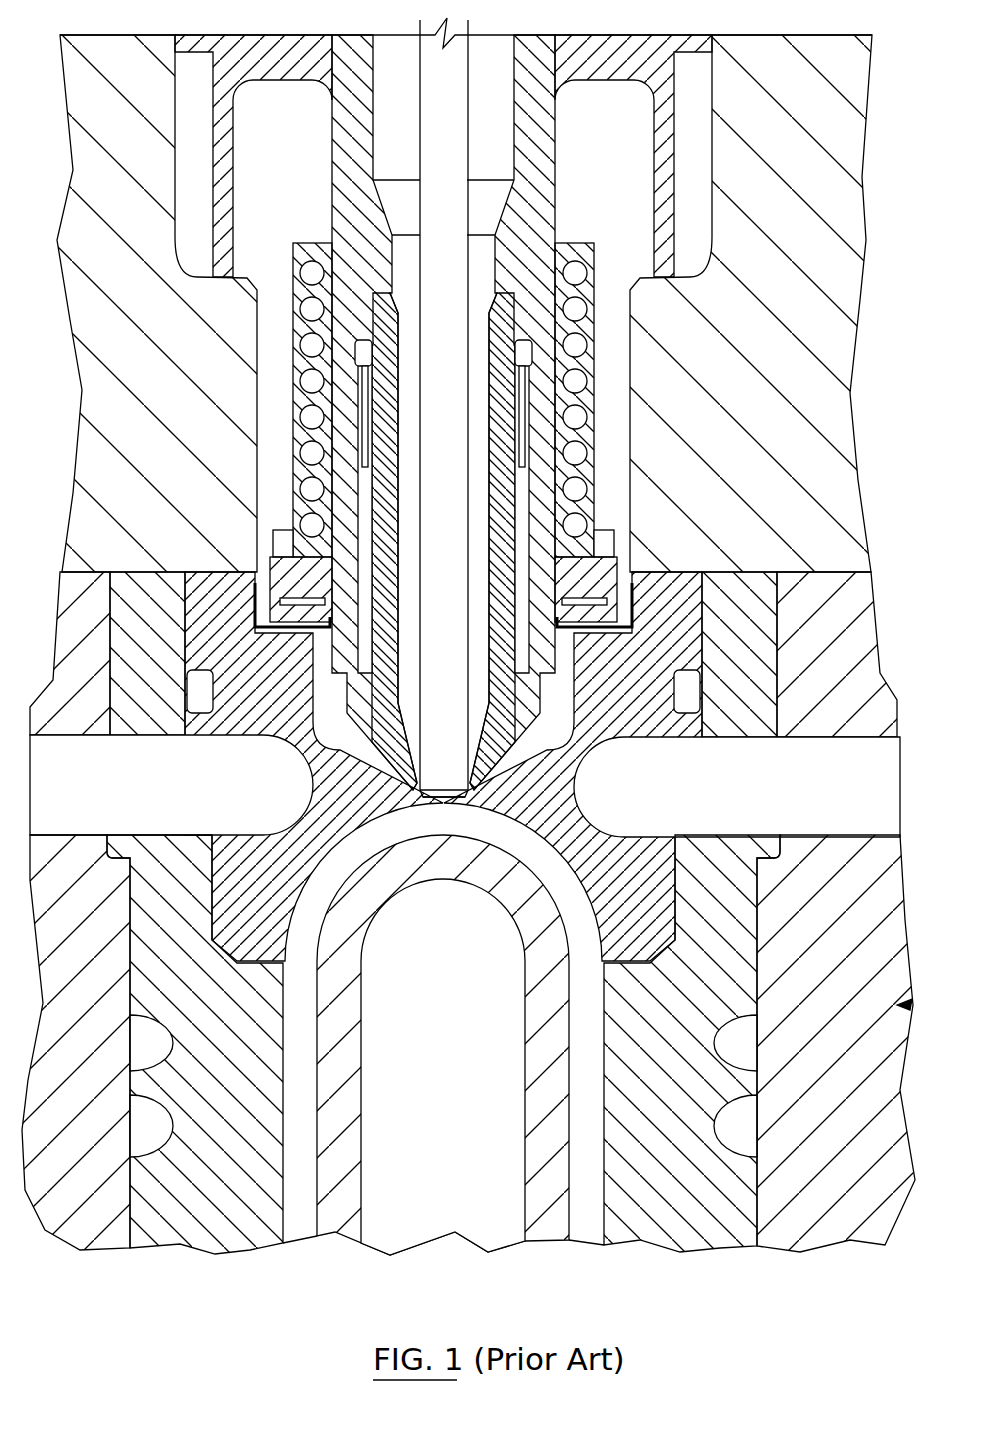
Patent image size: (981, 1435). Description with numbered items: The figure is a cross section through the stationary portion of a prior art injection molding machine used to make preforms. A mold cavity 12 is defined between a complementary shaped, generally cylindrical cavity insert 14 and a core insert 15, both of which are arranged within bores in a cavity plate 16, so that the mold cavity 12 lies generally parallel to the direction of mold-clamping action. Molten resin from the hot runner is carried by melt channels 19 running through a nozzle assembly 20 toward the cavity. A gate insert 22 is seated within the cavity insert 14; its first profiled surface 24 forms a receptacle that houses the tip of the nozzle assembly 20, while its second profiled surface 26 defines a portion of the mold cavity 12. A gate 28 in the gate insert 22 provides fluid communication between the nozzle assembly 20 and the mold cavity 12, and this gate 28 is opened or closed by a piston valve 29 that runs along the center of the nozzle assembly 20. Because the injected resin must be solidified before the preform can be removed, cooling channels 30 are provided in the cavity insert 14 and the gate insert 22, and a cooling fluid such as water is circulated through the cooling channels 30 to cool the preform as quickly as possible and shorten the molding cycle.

The mold cavity 12 is at (297, 1020).
The cavity insert 14 is at (742, 920).
The core insert 15 is at (555, 1139).
The cavity plate 16 is at (805, 572).
The melt channel 19 is at (480, 507).
The nozzle assembly 20 is at (236, 446).
The gate insert 22 is at (222, 572).
The first profiled surface 24 is at (345, 735).
The second profiled surface 26 is at (347, 862).
The gate 28 is at (450, 806).
The piston valve 29 is at (428, 372).
The cooling channel 30 is at (157, 793).